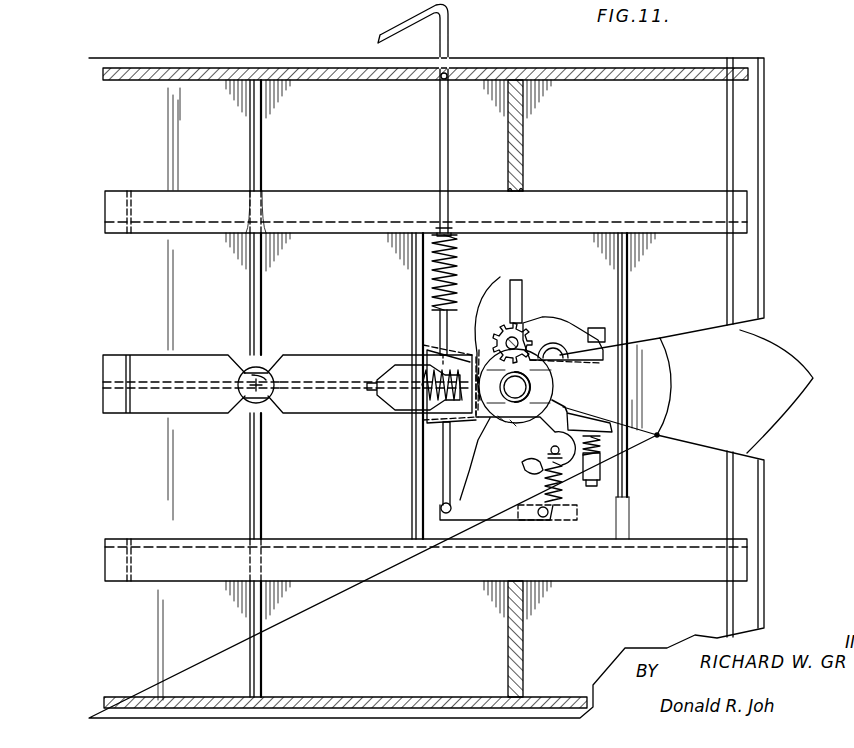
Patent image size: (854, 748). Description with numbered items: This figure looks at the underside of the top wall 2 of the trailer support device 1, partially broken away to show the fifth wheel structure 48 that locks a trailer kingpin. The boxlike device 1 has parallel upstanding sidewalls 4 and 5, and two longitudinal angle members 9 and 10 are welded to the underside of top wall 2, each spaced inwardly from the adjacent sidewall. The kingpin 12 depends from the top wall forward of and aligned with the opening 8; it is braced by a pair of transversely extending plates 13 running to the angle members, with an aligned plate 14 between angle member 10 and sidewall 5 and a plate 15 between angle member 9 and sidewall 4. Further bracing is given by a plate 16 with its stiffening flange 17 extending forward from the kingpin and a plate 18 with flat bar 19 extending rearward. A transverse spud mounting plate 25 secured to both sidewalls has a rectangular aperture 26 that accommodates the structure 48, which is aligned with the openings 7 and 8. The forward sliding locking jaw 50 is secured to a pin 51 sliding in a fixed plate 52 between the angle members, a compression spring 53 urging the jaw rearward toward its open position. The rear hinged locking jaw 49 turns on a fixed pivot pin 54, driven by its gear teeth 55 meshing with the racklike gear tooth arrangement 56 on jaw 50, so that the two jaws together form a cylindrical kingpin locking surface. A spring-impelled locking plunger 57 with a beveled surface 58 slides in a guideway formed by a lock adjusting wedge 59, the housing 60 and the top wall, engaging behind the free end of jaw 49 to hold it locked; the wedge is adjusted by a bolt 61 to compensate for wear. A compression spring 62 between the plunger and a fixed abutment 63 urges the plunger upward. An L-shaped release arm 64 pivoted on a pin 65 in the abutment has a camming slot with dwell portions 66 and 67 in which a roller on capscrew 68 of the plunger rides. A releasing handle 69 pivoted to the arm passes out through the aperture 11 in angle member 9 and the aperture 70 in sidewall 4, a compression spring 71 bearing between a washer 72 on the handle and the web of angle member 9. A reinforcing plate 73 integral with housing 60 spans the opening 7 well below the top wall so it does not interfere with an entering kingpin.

The support device 1 is at (756, 121).
The top wall 2 is at (352, 161).
The sidewall 4 is at (205, 70).
The sidewall 5 is at (333, 703).
The opening 7 is at (783, 391).
The opening 8 is at (498, 414).
The angle member 9 is at (305, 218).
The angle member 10 is at (288, 557).
The aperture 11 is at (443, 230).
The pin member 12 is at (253, 394).
The transversely extending plates 13 is at (252, 284).
The transversely extending plate 14 is at (253, 636).
The transversely extending plate 15 is at (252, 128).
The plate 16 is at (142, 380).
The stiffening flange 17 is at (152, 410).
The plate 18 is at (305, 380).
The flat bar 19 is at (313, 407).
The spud mounting plate 25 is at (518, 121).
The aperture 26 is at (518, 194).
The fifth wheel structure 48 is at (530, 317).
The locking jaw 49 is at (555, 324).
The locking jaw 50 is at (495, 352).
The pin 51 is at (396, 390).
The fixed plate 52 is at (416, 483).
The compression spring 53 is at (440, 374).
The pivot pin 54 is at (511, 292).
The gear teeth 55 is at (499, 279).
The racklike gear tooth arrangement 56 is at (500, 338).
The locking plunger 57 is at (566, 407).
The beveled surface 58 is at (546, 398).
The lock adjusting wedge 59 is at (610, 430).
The housing 60 is at (658, 436).
The bolt 61 is at (623, 497).
The compression spring 62 is at (545, 490).
The fixed abutment 63 is at (573, 520).
The release arm 64 is at (462, 516).
The pin 65 is at (544, 518).
The dwell portion 66 is at (532, 473).
The dwell portion 67 is at (507, 454).
The capscrew 68 is at (565, 465).
The releasing handle 69 is at (449, 33).
The aperture 70 is at (428, 82).
The compression spring 71 is at (433, 264).
The washer 72 is at (433, 306).
The reinforcing plate 73 is at (656, 368).